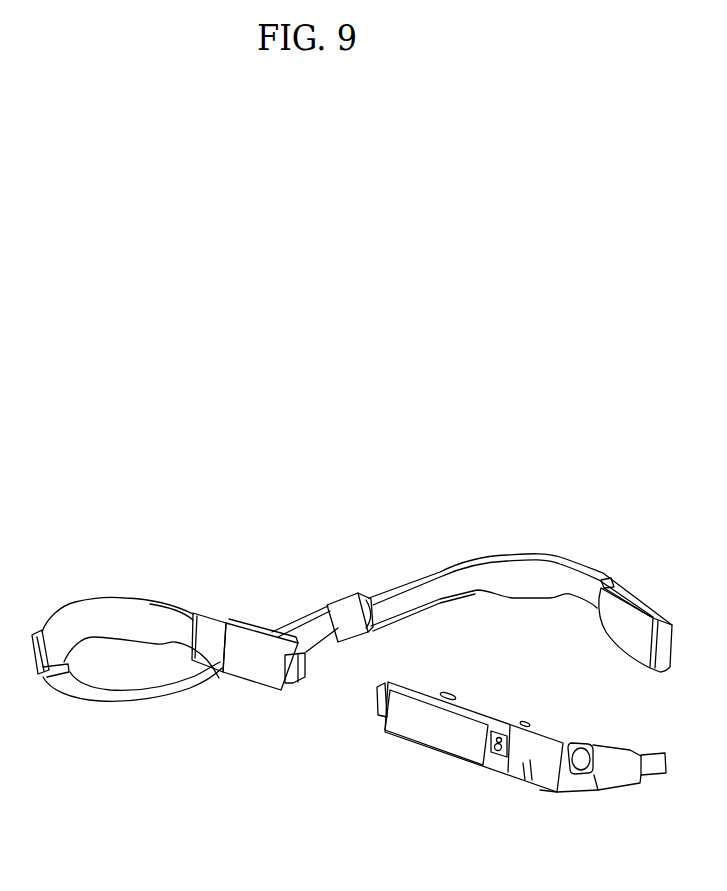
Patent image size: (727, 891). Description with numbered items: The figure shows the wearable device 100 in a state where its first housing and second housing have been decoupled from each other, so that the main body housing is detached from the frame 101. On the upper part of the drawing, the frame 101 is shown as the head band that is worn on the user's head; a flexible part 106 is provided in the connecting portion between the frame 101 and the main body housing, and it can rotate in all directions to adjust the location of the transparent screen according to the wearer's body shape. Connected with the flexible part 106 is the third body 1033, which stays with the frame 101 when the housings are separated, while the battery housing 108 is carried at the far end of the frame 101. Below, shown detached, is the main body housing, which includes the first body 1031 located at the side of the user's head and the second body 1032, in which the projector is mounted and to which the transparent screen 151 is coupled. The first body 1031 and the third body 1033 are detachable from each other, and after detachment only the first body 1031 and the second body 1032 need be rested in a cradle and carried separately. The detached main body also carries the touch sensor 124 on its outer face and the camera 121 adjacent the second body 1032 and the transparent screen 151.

The wearable device 100 is at (463, 521).
The frame 101 is at (95, 684).
The flexible part 106 is at (212, 650).
The third body 1033 is at (249, 668).
The battery housing 108 is at (631, 610).
The touch sensor 124 is at (433, 735).
The first body 1031 is at (493, 767).
The second body 1032 is at (558, 775).
The camera 121 is at (583, 774).
The transparent screen 151 is at (655, 773).